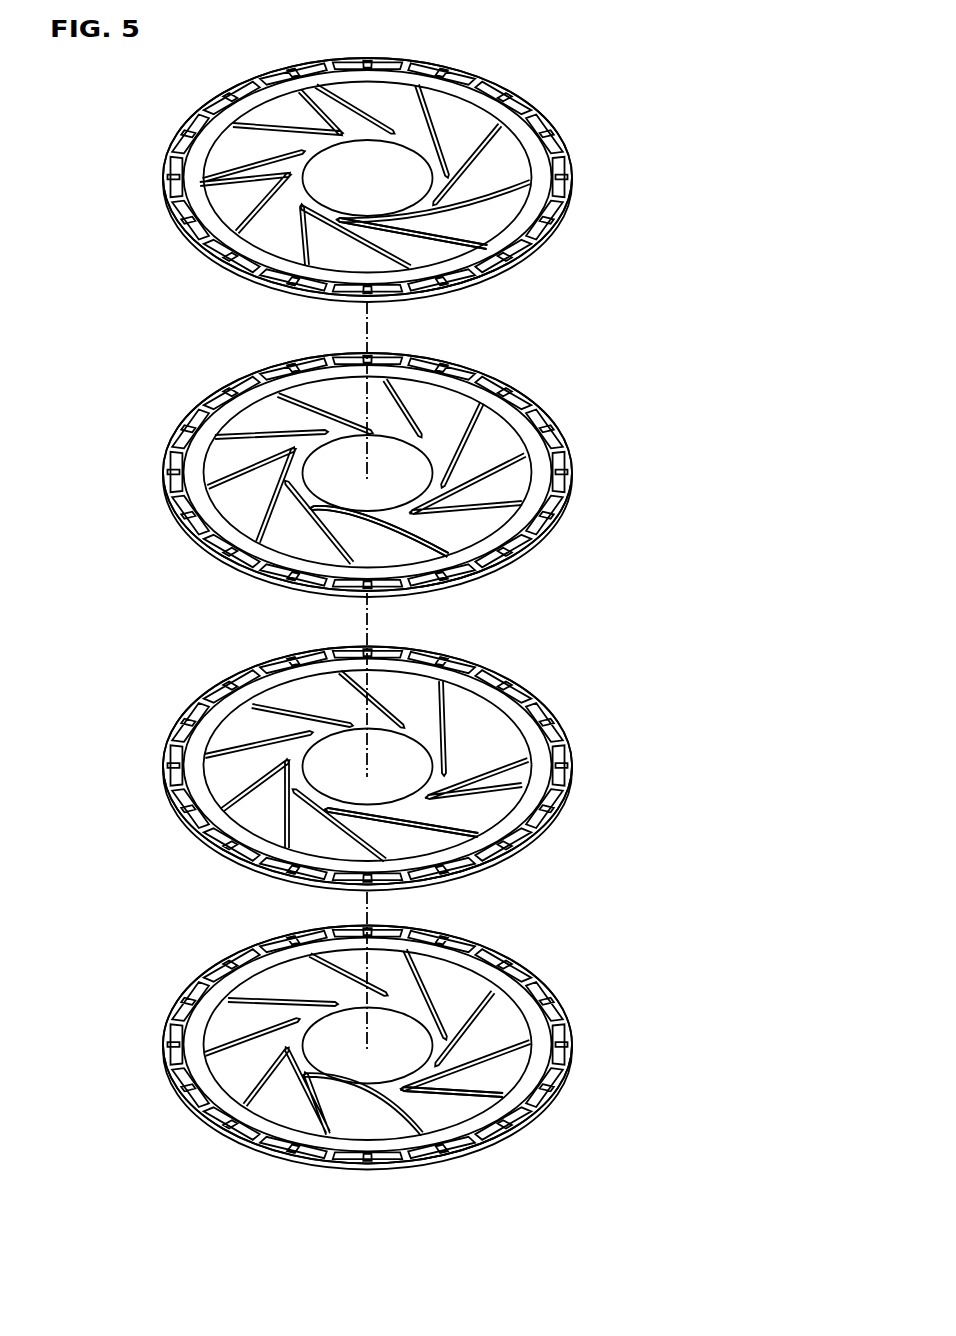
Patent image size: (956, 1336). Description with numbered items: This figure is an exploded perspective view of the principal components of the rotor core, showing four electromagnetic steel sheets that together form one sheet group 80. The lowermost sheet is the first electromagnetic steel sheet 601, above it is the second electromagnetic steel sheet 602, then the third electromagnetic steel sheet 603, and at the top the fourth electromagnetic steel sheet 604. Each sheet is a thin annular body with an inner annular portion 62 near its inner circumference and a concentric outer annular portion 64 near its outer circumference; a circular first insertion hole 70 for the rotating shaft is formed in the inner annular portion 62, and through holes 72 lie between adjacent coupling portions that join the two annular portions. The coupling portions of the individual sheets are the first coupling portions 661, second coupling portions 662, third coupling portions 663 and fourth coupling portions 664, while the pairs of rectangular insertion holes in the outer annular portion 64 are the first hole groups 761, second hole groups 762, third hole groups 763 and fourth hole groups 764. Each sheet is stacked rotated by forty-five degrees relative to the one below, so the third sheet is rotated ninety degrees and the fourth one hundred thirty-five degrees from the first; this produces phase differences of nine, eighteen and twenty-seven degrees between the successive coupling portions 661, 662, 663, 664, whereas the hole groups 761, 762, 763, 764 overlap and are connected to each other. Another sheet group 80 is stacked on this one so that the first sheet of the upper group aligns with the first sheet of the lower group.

The sheet group 80 is at (645, 66).
The first electromagnetic steel sheet 601 is at (167, 976).
The second electromagnetic steel sheet 602 is at (167, 698).
The third electromagnetic steel sheet 603 is at (167, 401).
The fourth electromagnetic steel sheet 604 is at (167, 106).
The inner annular portion 62 is at (303, 197).
The outer annular portion 64 is at (541, 189).
The first insertion hole 70 is at (352, 147).
The through hole 72 is at (512, 133).
The first coupling portion 661 is at (432, 1085).
The second coupling portion 662 is at (415, 820).
The third coupling portion 663 is at (388, 527).
The fourth coupling portion 664 is at (380, 240).
The first hole group 761 is at (503, 1140).
The second hole group 762 is at (517, 852).
The third hole group 763 is at (513, 557).
The fourth hole group 764 is at (466, 284).